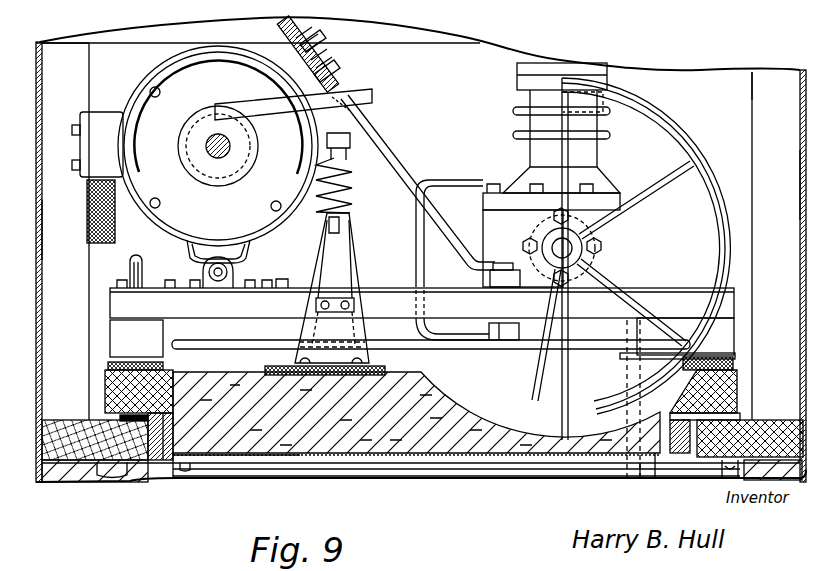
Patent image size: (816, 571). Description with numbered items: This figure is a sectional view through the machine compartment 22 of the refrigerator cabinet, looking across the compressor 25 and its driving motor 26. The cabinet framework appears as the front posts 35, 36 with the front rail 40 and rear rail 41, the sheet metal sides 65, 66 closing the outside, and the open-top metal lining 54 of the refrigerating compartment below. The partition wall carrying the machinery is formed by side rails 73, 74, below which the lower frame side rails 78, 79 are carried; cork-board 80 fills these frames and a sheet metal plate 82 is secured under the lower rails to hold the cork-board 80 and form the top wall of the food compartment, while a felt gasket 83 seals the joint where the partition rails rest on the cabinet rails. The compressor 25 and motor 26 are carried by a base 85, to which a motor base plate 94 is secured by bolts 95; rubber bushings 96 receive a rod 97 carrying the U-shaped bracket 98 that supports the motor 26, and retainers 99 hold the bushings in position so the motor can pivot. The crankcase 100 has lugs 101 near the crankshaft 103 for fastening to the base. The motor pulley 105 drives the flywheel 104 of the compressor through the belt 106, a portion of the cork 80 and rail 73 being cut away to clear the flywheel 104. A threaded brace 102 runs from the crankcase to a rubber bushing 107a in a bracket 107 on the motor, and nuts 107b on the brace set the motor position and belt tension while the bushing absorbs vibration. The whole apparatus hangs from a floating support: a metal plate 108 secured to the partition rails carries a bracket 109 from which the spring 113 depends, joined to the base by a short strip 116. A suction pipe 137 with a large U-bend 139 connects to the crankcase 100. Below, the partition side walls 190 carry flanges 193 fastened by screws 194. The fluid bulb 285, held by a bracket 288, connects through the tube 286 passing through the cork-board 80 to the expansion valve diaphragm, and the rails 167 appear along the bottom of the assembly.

The machine compartment 22 is at (694, 95).
The compressor 25 is at (600, 72).
The driving motor 26 is at (147, 110).
The front post 35 is at (772, 88).
The front post 36 is at (66, 58).
The front rail 40 is at (770, 430).
The rear rail 41 is at (73, 428).
The metal lining 54 is at (130, 486).
The sheet metal side 65 is at (796, 193).
The sheet metal side 66 is at (43, 230).
The side rail 73 is at (740, 373).
The side rail 74 is at (115, 382).
The side rail 78 is at (681, 423).
The side rail 79 is at (163, 440).
The cork-board 80 is at (455, 424).
The sheet metal plate 82 is at (220, 458).
The felt gasket 83 is at (727, 417).
The base 85 is at (405, 266).
The motor base plate 94 is at (282, 287).
The bolts 95 is at (170, 273).
The rubber bushings 96 is at (227, 287).
The rod 97 is at (220, 280).
The U-shaped bracket 98 is at (200, 243).
The retainers 99 is at (221, 257).
The crankcase 100 is at (490, 238).
The lugs 101 is at (493, 283).
The brace 102 is at (397, 166).
The crankshaft 103 is at (560, 247).
The flywheel 104 is at (696, 162).
The pulley 105 is at (226, 108).
The belt 106 is at (372, 97).
The bracket 107 is at (228, 57).
The rubber bushing 107a is at (327, 62).
The nuts 107b is at (335, 18).
The metal plate 108 is at (268, 360).
The bracket 109 is at (344, 235).
The spring 113 is at (305, 182).
The short strip 116 is at (334, 263).
The suction pipe 137 is at (457, 187).
The U-bend 139 is at (213, 345).
The rails 167 is at (296, 460).
The side walls 190 is at (187, 467).
The flanges 193 is at (173, 450).
The screws 194 is at (676, 478).
The fluid bulb 285 is at (459, 362).
The tube 286 is at (624, 380).
The bracket 288 is at (483, 332).